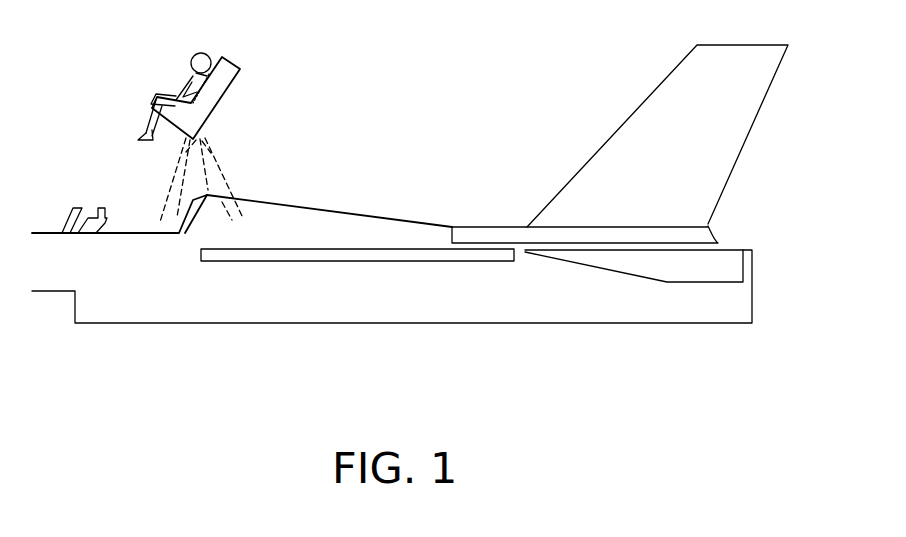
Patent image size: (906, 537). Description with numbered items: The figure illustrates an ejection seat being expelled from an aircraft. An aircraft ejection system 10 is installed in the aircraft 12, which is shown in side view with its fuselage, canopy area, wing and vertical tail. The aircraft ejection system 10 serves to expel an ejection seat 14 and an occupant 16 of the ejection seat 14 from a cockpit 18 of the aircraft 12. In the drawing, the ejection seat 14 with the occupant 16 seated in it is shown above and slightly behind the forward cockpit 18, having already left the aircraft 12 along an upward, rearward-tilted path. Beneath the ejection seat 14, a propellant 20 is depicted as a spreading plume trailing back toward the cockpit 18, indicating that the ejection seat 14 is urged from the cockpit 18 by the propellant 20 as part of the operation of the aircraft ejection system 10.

The aircraft ejection system 10 is at (410, 167).
The aircraft 12 is at (418, 299).
The ejection seat 14 is at (193, 115).
The occupant 16 is at (200, 52).
The cockpit 18 is at (123, 221).
The propellant 20 is at (215, 162).